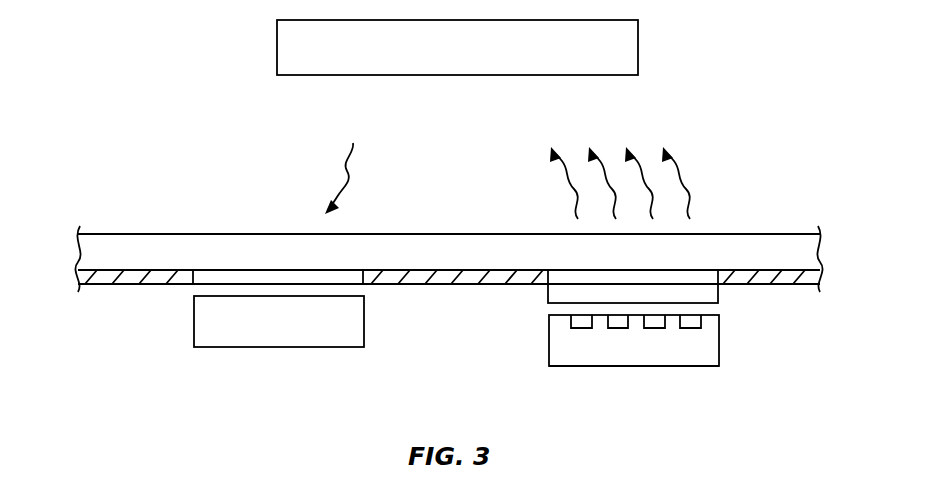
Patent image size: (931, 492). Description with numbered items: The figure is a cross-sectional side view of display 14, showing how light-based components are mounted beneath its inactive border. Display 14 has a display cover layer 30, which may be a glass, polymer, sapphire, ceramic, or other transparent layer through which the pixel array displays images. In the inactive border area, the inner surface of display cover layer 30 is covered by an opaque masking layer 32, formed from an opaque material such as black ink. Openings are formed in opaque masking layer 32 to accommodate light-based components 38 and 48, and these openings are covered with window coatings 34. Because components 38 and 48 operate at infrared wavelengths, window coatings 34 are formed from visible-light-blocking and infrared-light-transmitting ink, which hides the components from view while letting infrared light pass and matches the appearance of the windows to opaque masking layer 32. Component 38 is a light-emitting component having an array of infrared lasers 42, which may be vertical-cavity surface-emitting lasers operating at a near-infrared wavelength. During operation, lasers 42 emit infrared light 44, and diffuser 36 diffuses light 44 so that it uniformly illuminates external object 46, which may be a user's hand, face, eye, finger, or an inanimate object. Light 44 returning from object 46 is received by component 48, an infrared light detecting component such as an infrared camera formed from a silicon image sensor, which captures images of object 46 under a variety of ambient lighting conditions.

The display 14 is at (120, 193).
The display cover layer 30 is at (92, 252).
The opaque masking layer 32 is at (145, 282).
The window coatings 34 is at (258, 272).
The diffuser 36 is at (712, 294).
The light-emitting component 38 is at (536, 338).
The infrared lasers 42 is at (612, 330).
The infrared light 44 is at (345, 180).
The external object 46 is at (424, 75).
The infrared light detecting component 48 is at (283, 348).